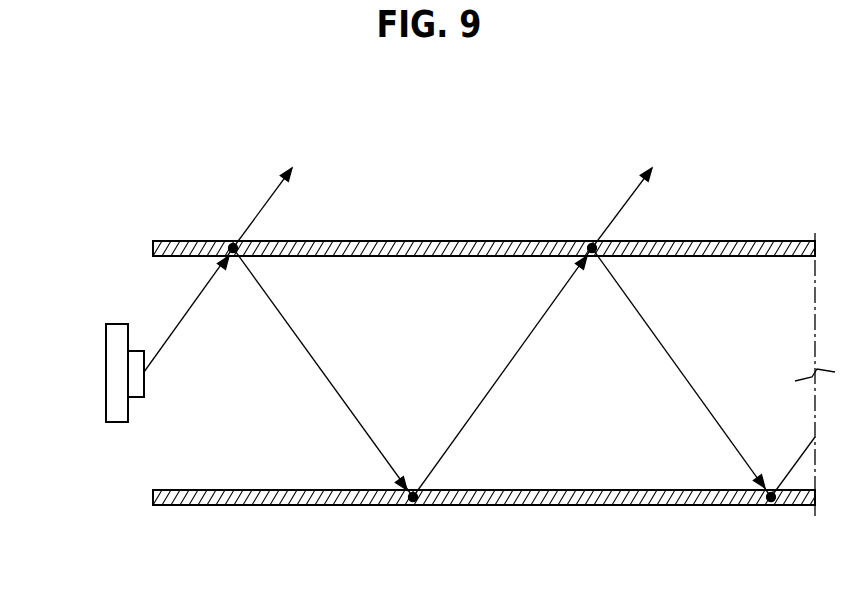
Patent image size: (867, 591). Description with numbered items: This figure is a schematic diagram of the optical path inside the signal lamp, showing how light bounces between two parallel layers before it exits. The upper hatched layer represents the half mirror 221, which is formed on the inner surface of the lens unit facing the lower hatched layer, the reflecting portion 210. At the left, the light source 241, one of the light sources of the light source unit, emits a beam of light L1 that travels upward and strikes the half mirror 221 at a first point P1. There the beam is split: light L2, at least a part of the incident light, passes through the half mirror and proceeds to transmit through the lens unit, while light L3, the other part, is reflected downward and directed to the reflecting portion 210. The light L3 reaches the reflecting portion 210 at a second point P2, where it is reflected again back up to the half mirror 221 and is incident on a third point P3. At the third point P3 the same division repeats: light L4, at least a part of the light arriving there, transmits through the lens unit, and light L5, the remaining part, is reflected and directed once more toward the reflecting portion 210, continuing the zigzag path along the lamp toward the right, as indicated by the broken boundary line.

The half mirror 221 is at (190, 247).
The reflecting portion 210 is at (235, 498).
The light source 241 is at (106, 374).
The first point P1 is at (233, 244).
The second point P2 is at (415, 503).
The third point P3 is at (590, 244).
The incident light L1 is at (188, 310).
The light L2 is at (275, 195).
The light L3 is at (412, 372).
The light L4 is at (634, 195).
The light L5 is at (681, 372).